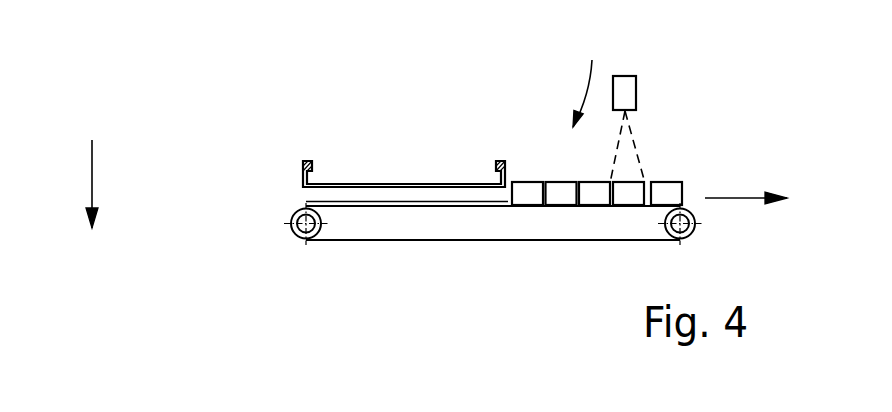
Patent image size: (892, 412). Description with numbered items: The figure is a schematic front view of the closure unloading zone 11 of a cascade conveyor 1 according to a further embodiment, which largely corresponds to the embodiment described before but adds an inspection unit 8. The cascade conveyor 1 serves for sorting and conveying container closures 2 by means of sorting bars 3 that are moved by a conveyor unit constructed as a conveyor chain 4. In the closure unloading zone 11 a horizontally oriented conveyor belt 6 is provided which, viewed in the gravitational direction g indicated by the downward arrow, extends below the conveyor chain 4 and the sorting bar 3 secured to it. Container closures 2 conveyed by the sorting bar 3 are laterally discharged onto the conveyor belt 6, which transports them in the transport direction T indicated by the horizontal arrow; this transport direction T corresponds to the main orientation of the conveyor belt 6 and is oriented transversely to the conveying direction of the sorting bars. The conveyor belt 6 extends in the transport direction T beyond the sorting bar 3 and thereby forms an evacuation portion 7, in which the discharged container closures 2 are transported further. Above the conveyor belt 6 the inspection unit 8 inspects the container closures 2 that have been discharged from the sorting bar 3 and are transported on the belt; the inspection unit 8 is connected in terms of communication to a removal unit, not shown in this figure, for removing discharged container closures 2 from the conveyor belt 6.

The cascade conveyor 1 is at (266, 84).
The container closures 2 is at (532, 192).
The sorting bar 3 is at (414, 190).
The conveyor chain 4 is at (308, 161).
The conveyor belt 6 is at (397, 266).
The evacuation portion 7 is at (585, 81).
The inspection unit 8 is at (625, 88).
The closure unloading zone 11 is at (265, 215).
The transport direction T is at (746, 198).
The gravitational direction g is at (92, 175).